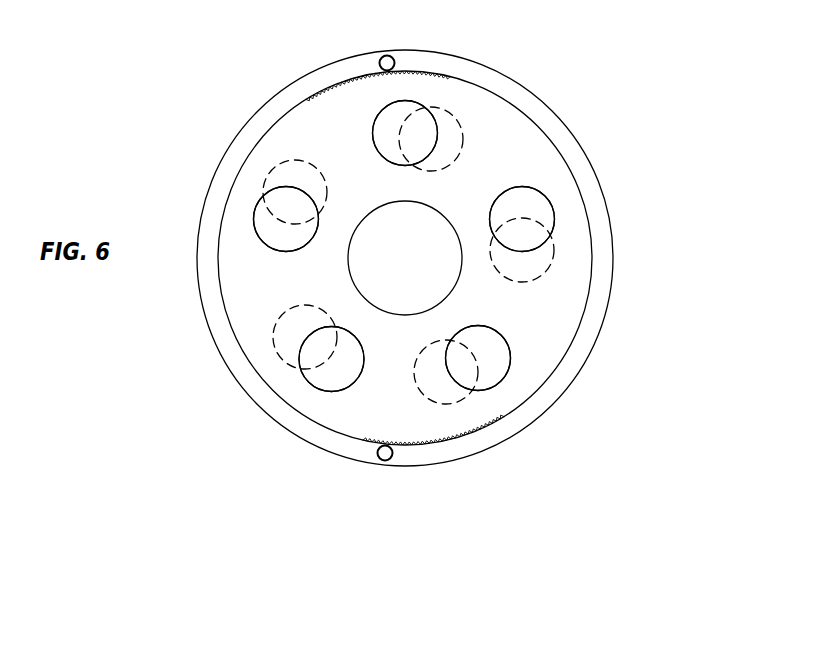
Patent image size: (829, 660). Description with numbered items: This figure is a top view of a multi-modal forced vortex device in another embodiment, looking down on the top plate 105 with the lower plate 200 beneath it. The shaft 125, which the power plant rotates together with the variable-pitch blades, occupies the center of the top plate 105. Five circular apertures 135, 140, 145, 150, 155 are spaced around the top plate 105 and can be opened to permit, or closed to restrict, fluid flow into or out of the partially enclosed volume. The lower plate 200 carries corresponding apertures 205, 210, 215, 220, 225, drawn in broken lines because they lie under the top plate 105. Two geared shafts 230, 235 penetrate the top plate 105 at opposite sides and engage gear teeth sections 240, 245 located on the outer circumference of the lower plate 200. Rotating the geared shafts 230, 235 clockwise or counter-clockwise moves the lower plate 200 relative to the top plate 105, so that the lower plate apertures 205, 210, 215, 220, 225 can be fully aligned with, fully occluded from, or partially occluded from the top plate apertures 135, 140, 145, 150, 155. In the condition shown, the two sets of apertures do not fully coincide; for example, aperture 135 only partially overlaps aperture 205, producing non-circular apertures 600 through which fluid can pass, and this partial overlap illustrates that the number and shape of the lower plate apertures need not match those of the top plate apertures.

The top plate 105 is at (572, 134).
The shaft 125 is at (424, 271).
The aperture 135 is at (378, 118).
The aperture 140 is at (293, 249).
The aperture 145 is at (329, 378).
The aperture 150 is at (492, 362).
The aperture 155 is at (532, 207).
The lower plate 200 is at (570, 313).
The aperture 205 is at (450, 146).
The aperture 210 is at (323, 187).
The aperture 215 is at (290, 333).
The aperture 220 is at (437, 396).
The aperture 225 is at (533, 262).
The geared shaft 230 is at (392, 56).
The geared shaft 235 is at (392, 460).
The gear teeth section 240 is at (452, 73).
The gear teeth section 245 is at (505, 418).
The non-circular apertures 600 is at (414, 163).